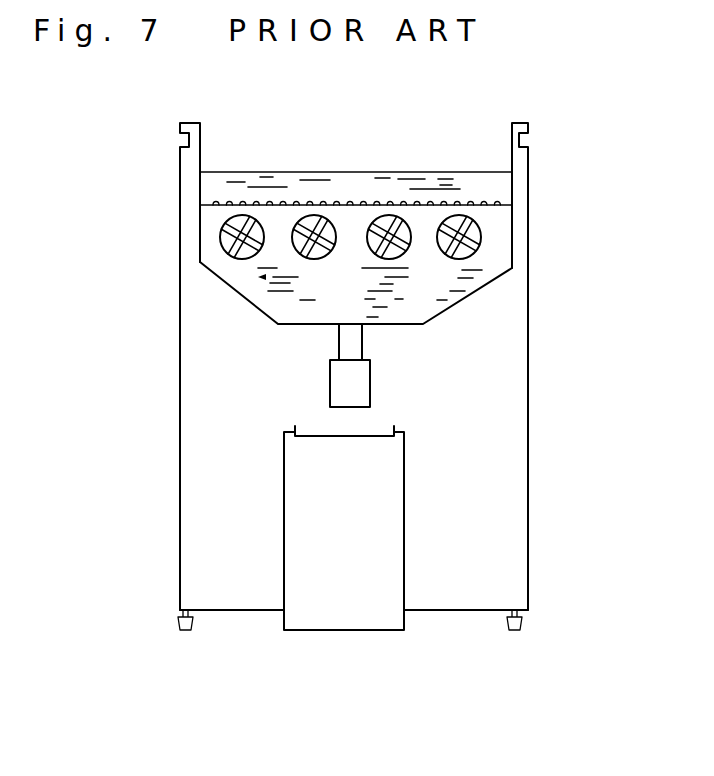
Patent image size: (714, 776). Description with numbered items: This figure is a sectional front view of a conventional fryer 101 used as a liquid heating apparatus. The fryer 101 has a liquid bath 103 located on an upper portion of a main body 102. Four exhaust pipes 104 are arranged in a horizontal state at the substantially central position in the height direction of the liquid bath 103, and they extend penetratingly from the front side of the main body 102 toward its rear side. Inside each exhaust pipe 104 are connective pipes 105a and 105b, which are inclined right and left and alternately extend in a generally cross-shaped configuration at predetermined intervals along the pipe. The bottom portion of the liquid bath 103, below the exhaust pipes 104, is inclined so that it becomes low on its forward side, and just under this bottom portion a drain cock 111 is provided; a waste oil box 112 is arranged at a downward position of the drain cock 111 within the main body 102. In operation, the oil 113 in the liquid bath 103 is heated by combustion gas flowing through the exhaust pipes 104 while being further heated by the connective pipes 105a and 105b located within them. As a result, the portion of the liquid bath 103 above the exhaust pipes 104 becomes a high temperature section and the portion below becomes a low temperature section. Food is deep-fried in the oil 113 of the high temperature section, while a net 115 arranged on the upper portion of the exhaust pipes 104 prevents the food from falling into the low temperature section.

The fryer 101 is at (558, 143).
The main body 102 is at (528, 438).
The liquid bath 103 is at (218, 288).
The exhaust pipes 104 is at (214, 229).
The connective pipe 105a is at (389, 215).
The connective pipe 105b is at (367, 233).
The drain cock 111 is at (371, 380).
The collection container 112 is at (347, 622).
The oil 113 is at (278, 195).
The net 115 is at (458, 197).